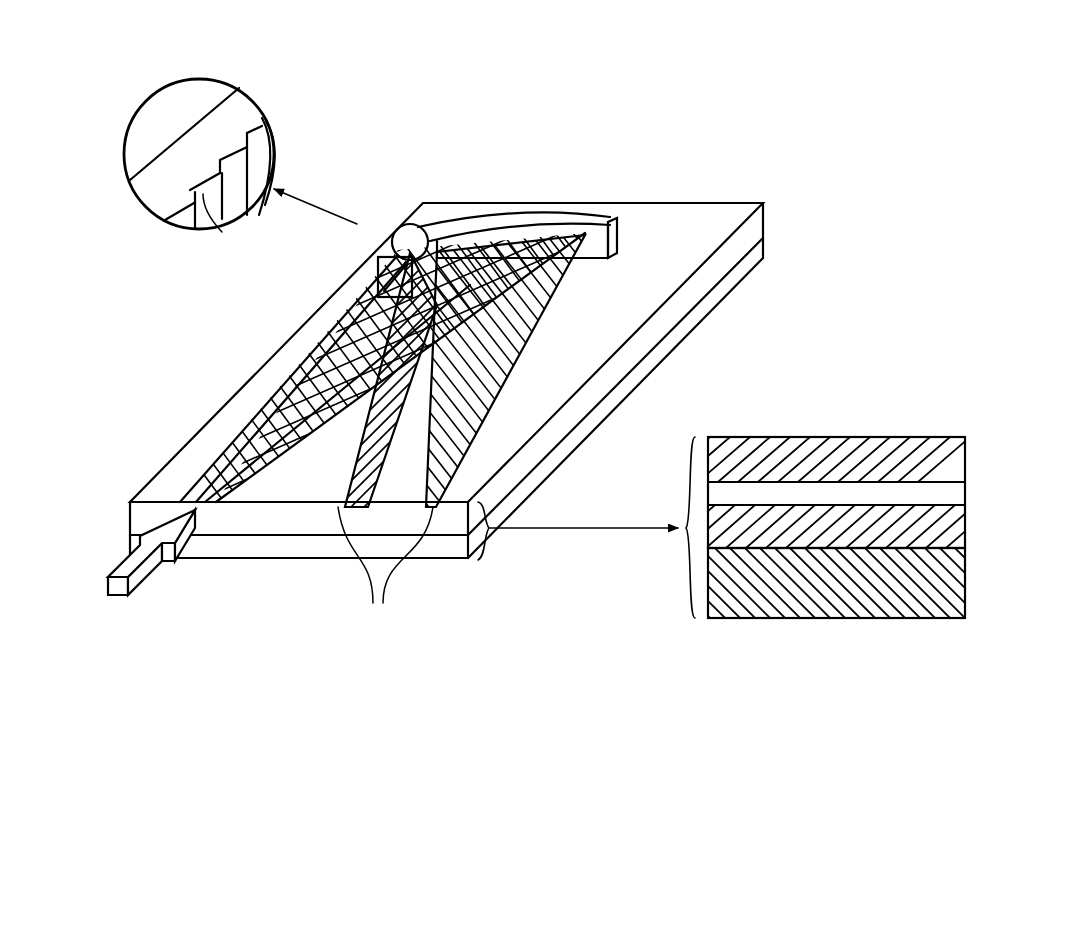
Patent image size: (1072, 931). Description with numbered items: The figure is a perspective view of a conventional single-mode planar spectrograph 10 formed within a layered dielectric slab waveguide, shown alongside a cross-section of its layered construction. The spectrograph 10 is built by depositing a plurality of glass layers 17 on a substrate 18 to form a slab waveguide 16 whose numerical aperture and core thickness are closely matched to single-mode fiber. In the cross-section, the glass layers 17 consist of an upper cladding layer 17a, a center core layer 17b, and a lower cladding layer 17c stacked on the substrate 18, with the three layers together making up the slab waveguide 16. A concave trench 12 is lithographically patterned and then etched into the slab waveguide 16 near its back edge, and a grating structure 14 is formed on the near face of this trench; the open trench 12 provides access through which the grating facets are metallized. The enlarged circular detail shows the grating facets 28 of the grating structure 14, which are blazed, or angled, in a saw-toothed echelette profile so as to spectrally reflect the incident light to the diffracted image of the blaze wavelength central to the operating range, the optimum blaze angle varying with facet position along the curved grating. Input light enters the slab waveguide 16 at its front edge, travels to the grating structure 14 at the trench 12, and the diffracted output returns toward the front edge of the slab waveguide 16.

The planar spectrograph 10 is at (741, 106).
The concave trench 12 is at (604, 209).
The grating structure 14 is at (240, 160).
The slab waveguide 16 is at (768, 219).
The glass layers 17 is at (576, 485).
The upper cladding layer 17a is at (966, 451).
The center core layer 17b is at (966, 488).
The lower cladding layer 17c is at (963, 536).
The substrate 18 is at (768, 250).
The grating facets 28 is at (243, 198).